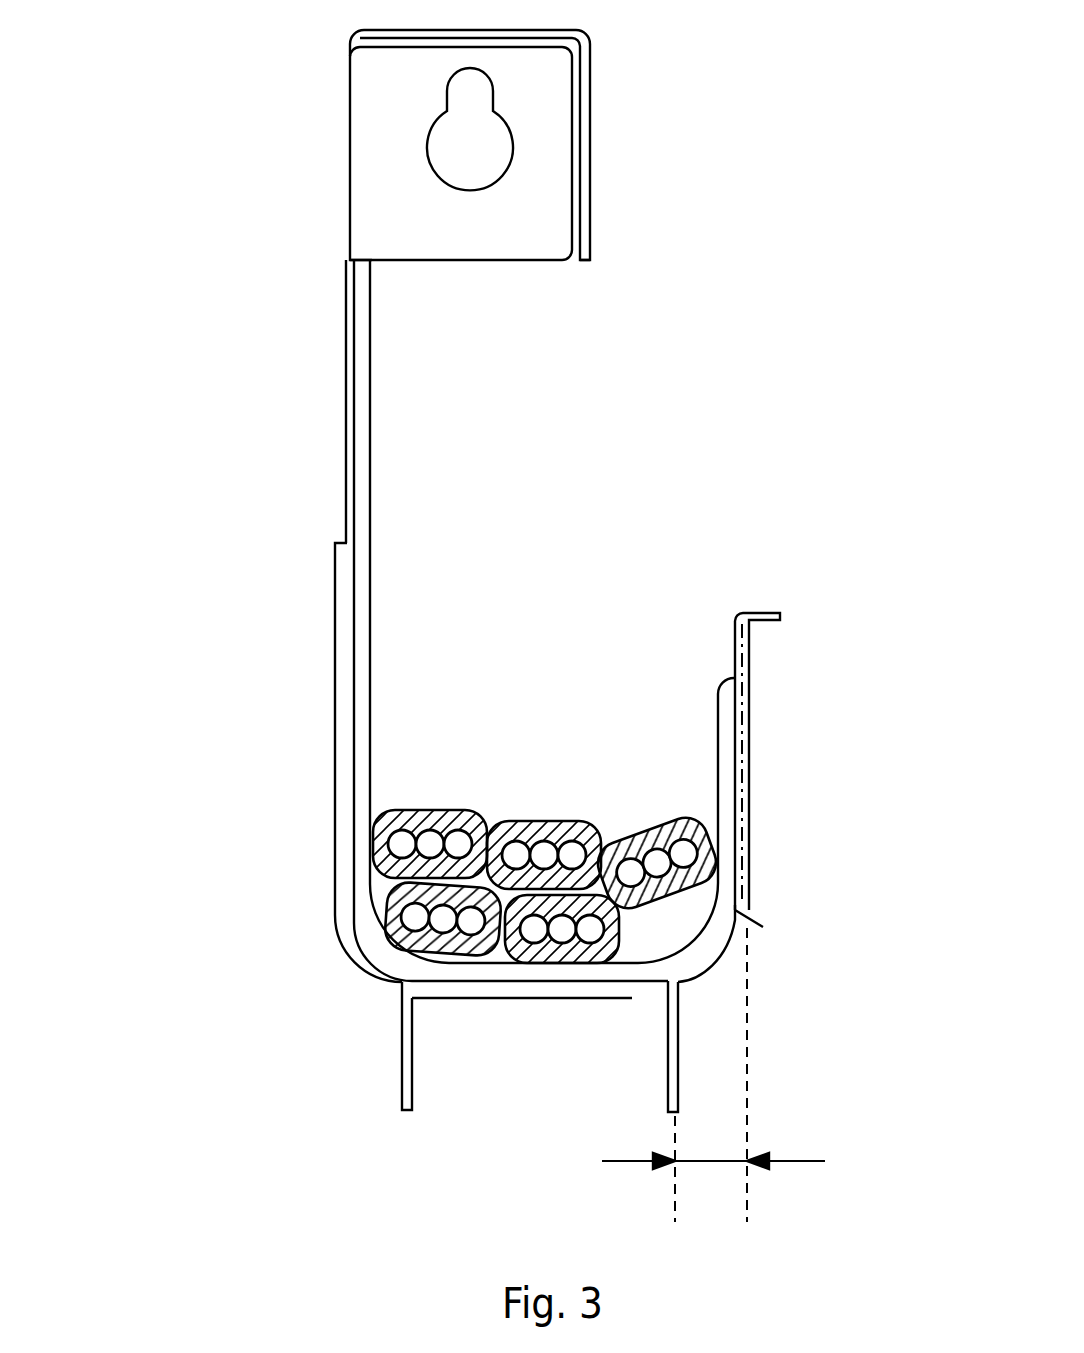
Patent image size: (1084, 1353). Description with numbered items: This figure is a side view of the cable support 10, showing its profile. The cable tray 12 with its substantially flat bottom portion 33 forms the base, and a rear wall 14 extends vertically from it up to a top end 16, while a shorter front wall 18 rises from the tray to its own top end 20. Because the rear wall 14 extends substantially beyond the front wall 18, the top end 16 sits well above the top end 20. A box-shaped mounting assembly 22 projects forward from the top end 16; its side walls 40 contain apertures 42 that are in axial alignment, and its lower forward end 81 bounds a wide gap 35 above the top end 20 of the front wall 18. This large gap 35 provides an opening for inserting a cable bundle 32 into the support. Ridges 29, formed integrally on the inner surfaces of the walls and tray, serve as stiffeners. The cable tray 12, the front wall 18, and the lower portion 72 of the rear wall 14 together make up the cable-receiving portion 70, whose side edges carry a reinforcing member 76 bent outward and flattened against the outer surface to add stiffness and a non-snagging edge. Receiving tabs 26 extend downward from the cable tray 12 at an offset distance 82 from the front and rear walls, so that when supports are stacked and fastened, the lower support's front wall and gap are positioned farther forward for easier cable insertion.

The cable support 10 is at (282, 345).
The cable tray 12 is at (505, 972).
The rear wall 14 is at (395, 350).
The top end 16 is at (348, 258).
The front wall 18 is at (773, 677).
The top end 20 is at (742, 611).
The box-shaped mounting assembly 22 is at (592, 80).
The receiving tabs 26 is at (402, 1058).
The ridges 29 is at (362, 442).
The cable bundle 32 is at (543, 820).
The flat bottom portion 33 is at (560, 1000).
The gap 35 is at (677, 433).
The side walls 40 is at (432, 226).
The apertures 42 is at (470, 147).
The cable-receiving portion 70 is at (540, 590).
The lower portion 72 is at (325, 543).
The reinforcing member 76 is at (747, 743).
The lower forward end 81 is at (590, 259).
The offset distance 82 is at (708, 1160).